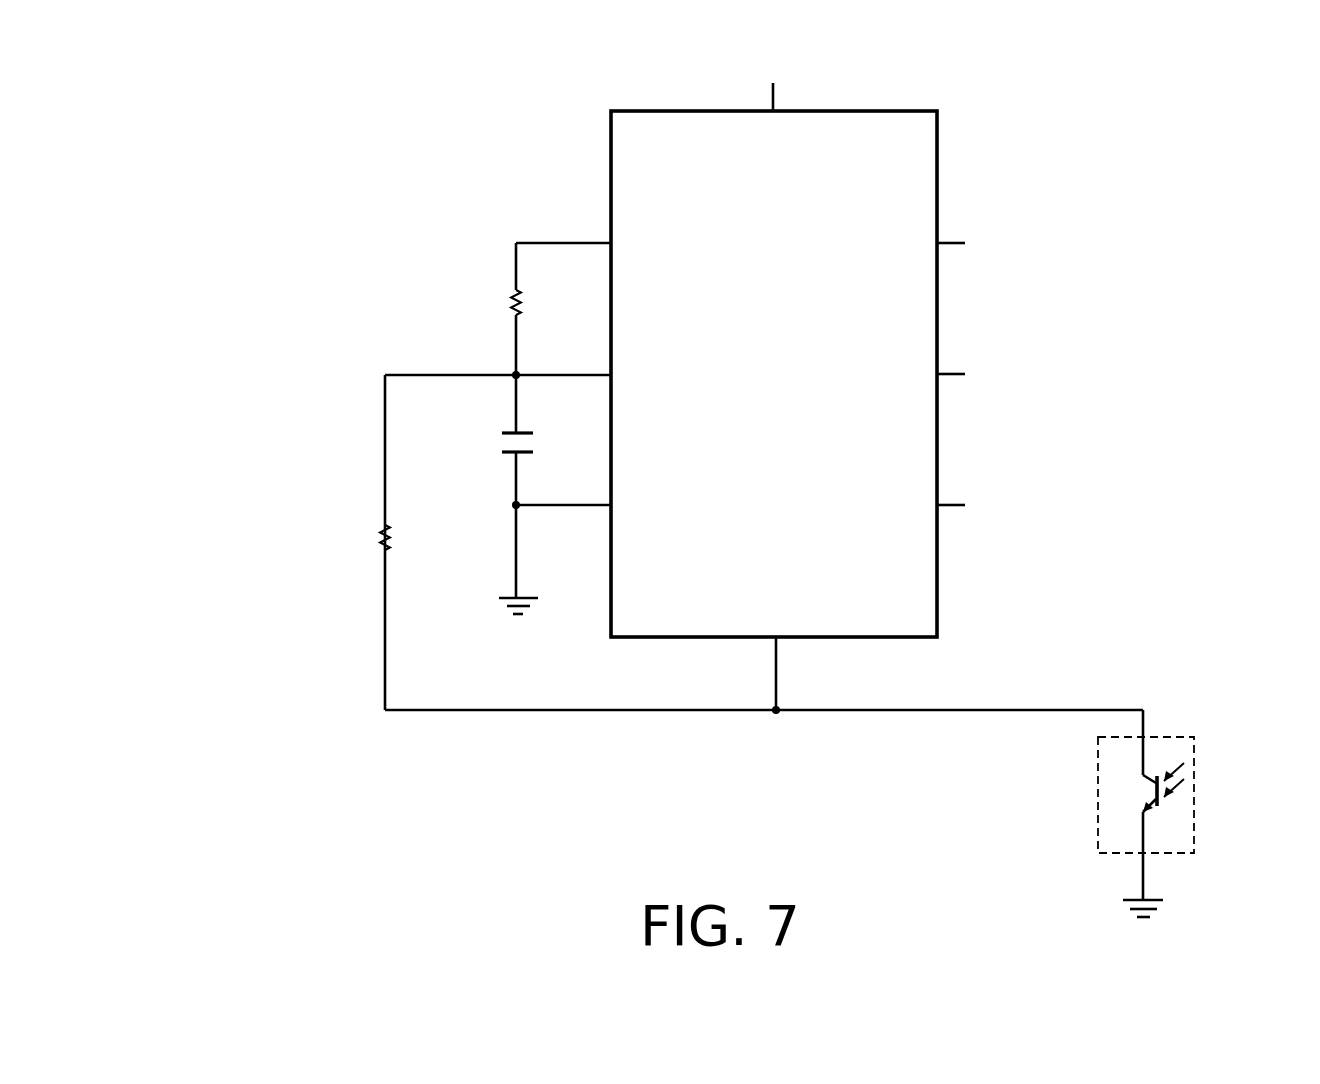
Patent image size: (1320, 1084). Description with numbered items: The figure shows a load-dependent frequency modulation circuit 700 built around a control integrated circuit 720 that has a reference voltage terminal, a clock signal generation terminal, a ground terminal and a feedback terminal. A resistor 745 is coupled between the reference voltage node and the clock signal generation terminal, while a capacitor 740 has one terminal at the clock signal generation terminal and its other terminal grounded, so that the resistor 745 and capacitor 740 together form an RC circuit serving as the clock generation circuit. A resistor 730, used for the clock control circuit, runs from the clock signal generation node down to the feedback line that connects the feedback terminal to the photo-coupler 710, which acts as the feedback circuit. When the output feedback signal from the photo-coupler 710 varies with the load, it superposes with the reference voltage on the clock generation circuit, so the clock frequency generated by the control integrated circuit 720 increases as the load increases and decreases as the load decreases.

The load-dependent frequency modulation circuit 700 is at (277, 114).
The photo-coupler 710 is at (1170, 733).
The control integrated circuit 720 is at (900, 158).
The resistor 730 is at (375, 540).
The capacitor 740 is at (507, 460).
The resistor 745 is at (505, 293).